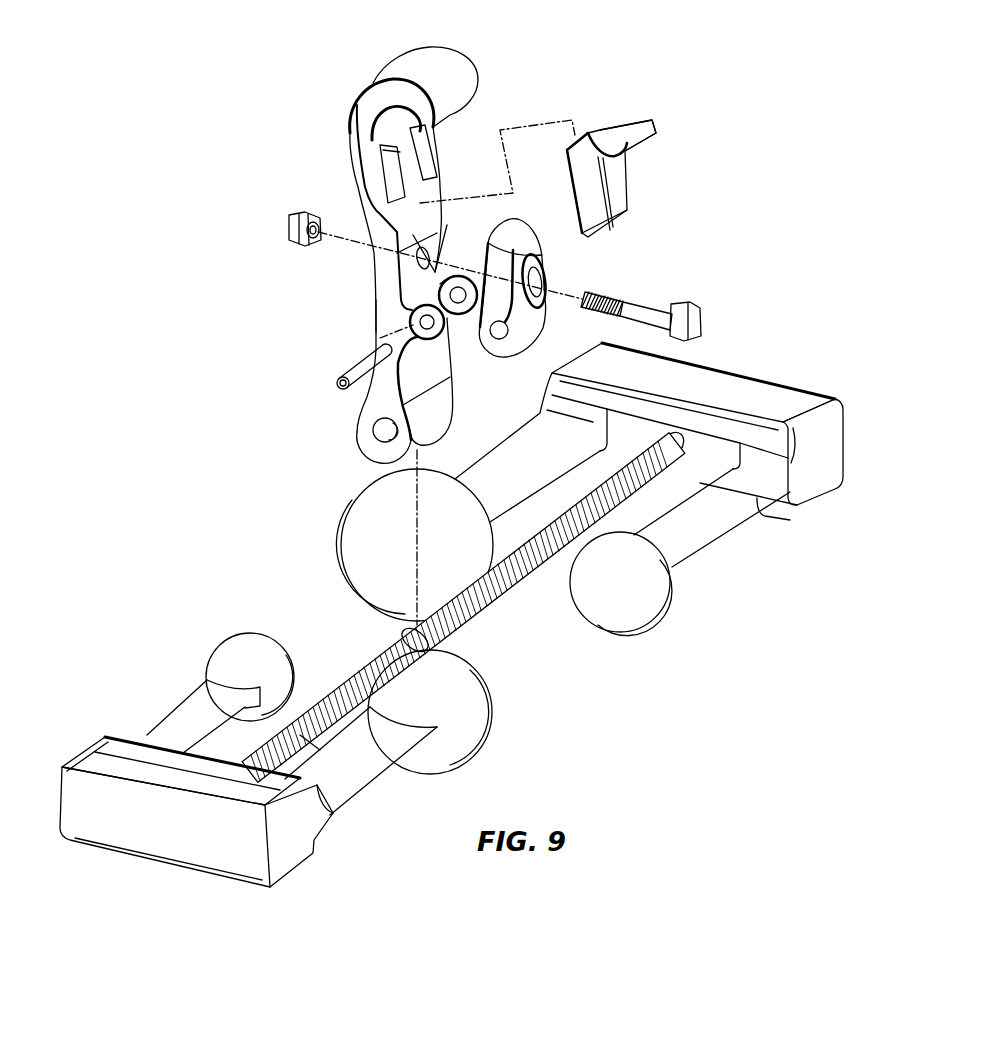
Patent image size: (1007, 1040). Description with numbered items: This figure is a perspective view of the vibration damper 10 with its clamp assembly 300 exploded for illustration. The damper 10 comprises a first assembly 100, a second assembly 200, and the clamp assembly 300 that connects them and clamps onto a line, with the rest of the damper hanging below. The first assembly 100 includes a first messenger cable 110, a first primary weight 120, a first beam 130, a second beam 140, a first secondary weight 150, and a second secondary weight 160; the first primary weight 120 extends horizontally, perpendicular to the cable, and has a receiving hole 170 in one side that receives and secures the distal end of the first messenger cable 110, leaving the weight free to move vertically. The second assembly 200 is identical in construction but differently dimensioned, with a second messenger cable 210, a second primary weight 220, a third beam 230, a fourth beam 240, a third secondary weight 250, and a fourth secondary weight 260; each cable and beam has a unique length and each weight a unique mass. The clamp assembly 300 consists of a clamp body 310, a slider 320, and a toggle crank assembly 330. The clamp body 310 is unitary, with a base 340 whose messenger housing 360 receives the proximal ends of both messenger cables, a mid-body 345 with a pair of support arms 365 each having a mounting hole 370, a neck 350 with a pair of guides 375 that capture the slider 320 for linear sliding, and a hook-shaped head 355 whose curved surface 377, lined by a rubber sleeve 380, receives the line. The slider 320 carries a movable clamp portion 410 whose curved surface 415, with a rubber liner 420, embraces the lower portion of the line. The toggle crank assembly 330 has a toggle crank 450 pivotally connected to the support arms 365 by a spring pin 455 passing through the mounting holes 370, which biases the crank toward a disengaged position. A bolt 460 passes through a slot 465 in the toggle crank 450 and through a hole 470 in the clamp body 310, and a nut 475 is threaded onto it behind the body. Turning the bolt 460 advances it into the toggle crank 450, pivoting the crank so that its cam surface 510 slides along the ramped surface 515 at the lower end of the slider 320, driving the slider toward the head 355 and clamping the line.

The vibration damper 10 is at (187, 411).
The first assembly 100 is at (778, 368).
The first messenger cable 110 is at (520, 577).
The first primary weight 120 is at (720, 388).
The first beam 130 is at (502, 470).
The second beam 140 is at (700, 520).
The first secondary weight 150 is at (372, 522).
The second secondary weight 160 is at (633, 610).
The receiving hole 170 is at (677, 462).
The second assembly 200 is at (101, 714).
The second messenger cable 210 is at (337, 687).
The second primary weight 220 is at (190, 843).
The third beam 230 is at (347, 773).
The fourth beam 240 is at (183, 713).
The third secondary weight 250 is at (463, 720).
The fourth secondary weight 260 is at (245, 647).
The clamp assembly 300 is at (549, 64).
The clamp body 310 is at (300, 281).
The slider 320 is at (678, 119).
The toggle crank assembly 330 is at (640, 259).
The base 340 is at (364, 412).
The mid-body 345 is at (385, 318).
The neck 350 is at (352, 182).
The head 355 is at (362, 103).
The messenger housing 360 is at (380, 440).
The support arms 365 is at (432, 340).
The mounting hole 370 is at (433, 262).
The guides 375 is at (400, 167).
The curved surface 377 is at (375, 128).
The rubber sleeve 380 is at (394, 104).
The movable clamp portion 410 is at (615, 157).
The curved surface 415 is at (610, 127).
The rubber liner 420 is at (597, 130).
The toggle crank 450 is at (545, 330).
The spring pin 455 is at (346, 371).
The bolt 460 is at (660, 312).
The slot 465 is at (546, 280).
The hole 470 is at (420, 274).
The nut 475 is at (290, 216).
The cam surface 510 is at (500, 227).
The ramped surface 515 is at (584, 240).